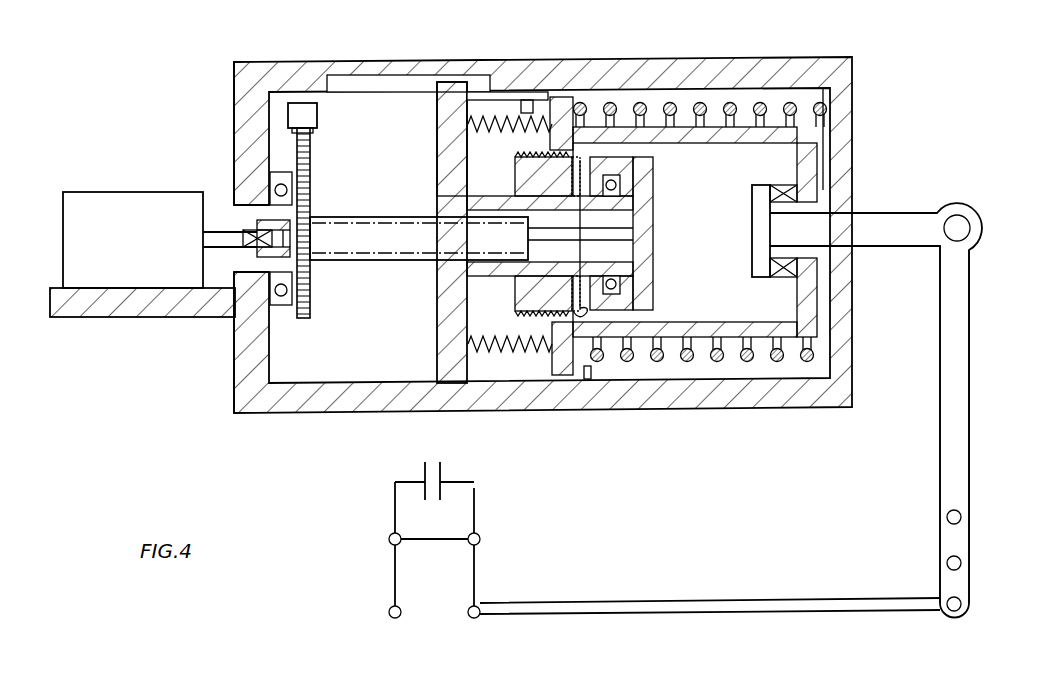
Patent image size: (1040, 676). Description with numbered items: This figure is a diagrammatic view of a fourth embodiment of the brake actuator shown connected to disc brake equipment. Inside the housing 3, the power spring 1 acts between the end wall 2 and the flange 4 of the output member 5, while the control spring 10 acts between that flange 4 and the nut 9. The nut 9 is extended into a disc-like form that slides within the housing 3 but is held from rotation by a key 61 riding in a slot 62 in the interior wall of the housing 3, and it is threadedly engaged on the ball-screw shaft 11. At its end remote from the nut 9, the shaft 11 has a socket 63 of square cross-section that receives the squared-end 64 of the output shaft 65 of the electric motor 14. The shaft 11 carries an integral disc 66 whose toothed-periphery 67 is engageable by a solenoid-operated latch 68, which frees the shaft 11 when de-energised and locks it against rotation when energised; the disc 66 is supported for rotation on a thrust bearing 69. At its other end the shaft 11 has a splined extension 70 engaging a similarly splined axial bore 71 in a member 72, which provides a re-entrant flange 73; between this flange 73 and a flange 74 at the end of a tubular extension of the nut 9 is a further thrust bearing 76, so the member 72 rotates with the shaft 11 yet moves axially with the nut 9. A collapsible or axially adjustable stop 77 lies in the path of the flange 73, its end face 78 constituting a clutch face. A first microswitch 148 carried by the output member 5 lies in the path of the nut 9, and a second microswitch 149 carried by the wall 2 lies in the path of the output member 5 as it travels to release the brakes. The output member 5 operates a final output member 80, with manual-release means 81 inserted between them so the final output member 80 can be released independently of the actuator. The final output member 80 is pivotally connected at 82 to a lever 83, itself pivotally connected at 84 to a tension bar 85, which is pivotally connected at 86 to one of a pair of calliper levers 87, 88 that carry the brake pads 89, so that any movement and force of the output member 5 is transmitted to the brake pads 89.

The power spring 1 is at (668, 95).
The end wall 2 is at (838, 110).
The housing 3 is at (294, 420).
The flange 4 is at (563, 98).
The output member 5 is at (772, 332).
The nut 9 is at (438, 347).
The control spring 10 is at (491, 113).
The ball-screw shaft 11 is at (430, 240).
The electric motor 14 is at (142, 254).
The key 61 is at (447, 98).
The slot 62 is at (368, 80).
The socket 63 is at (254, 258).
The squared-end 64 is at (252, 238).
The output shaft 65 is at (222, 240).
The disc 66 is at (314, 318).
The toothed-periphery 67 is at (270, 290).
The solenoid-operated latch 68 is at (303, 99).
The thrust bearing 69 is at (280, 302).
The splined extension 70 is at (637, 232).
The splined axial bore 71 is at (640, 238).
The member 72 is at (655, 170).
The re-entrant flange 73 is at (621, 186).
The flange 74 is at (621, 284).
The thrust bearing 76 is at (613, 291).
The stop 77 is at (545, 296).
The end face 78 is at (574, 322).
The final output member 80 is at (870, 237).
The manual-release means 81 is at (785, 186).
The pivotal connection 82 is at (963, 238).
The lever 83 is at (952, 413).
The pivotal connection 84 is at (957, 604).
The tension bar 85 is at (698, 608).
The pivotal connection 86 is at (471, 617).
The calliper lever 87 is at (478, 566).
The calliper lever 88 is at (393, 570).
The brake pads 89 is at (432, 494).
The first microswitch 148 is at (528, 99).
The second microswitch 149 is at (588, 382).